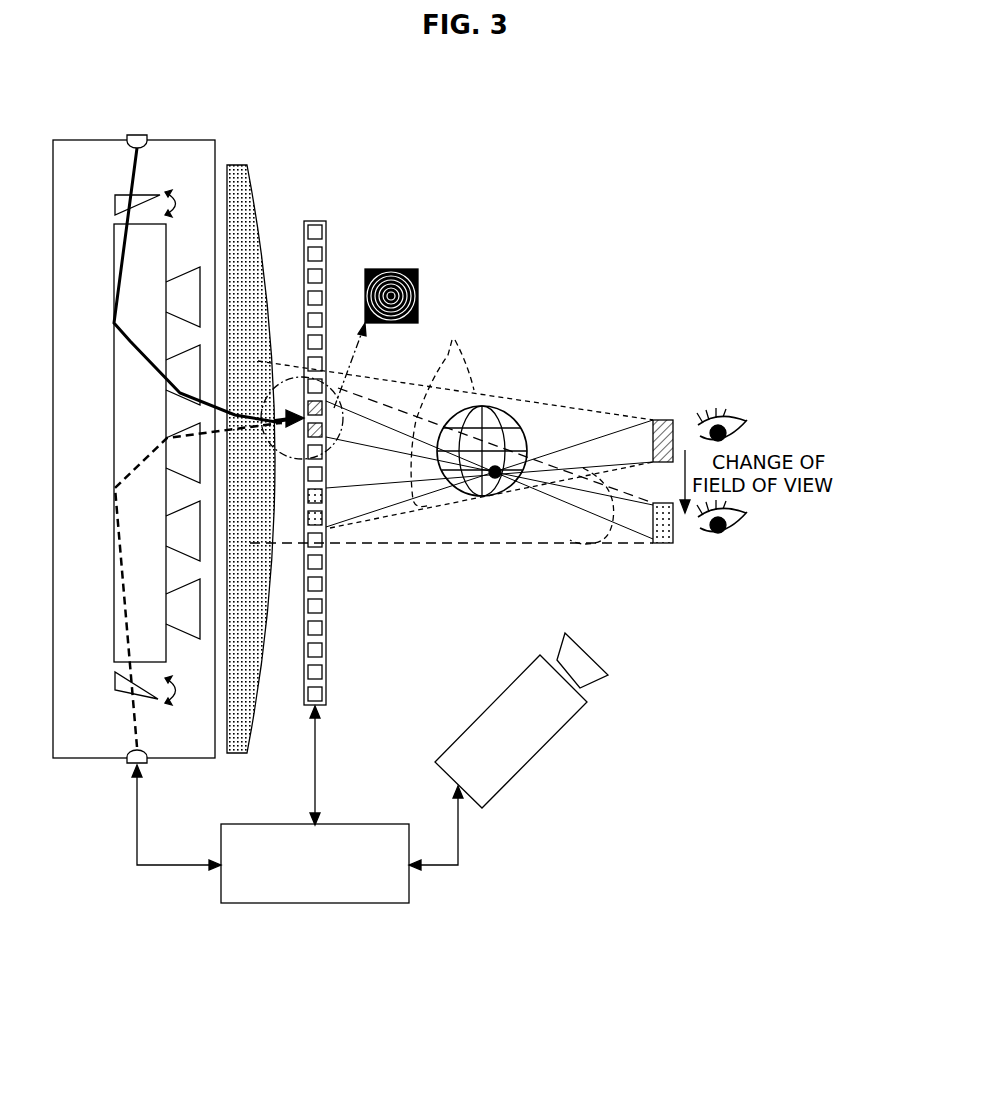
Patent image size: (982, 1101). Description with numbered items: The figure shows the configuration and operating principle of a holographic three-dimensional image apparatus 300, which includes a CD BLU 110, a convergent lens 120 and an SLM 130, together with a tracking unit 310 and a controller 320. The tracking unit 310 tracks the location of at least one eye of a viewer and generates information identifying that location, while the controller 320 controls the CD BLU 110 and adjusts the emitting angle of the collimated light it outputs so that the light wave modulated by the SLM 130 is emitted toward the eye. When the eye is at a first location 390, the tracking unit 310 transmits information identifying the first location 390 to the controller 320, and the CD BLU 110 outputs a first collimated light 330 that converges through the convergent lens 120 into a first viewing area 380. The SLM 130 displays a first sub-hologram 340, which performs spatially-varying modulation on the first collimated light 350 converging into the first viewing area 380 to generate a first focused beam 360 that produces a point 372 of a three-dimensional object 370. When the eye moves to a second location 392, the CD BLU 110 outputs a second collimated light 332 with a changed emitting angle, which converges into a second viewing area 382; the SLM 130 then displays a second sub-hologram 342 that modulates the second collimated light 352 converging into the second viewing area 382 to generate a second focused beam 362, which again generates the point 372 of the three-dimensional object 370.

The holographic 3D image apparatus 300 is at (484, 100).
The CD BLU 110 is at (178, 139).
The convergent lens 120 is at (237, 164).
The SLM 130 is at (315, 221).
The tracking unit 310 is at (540, 753).
The controller 320 is at (315, 905).
The first collimated light 330 is at (142, 456).
The second collimated light 332 is at (148, 366).
The first sub-hologram 340 is at (337, 413).
The second sub-hologram 342 is at (323, 520).
The first collimated light converging into the first viewing area 350 is at (442, 411).
The second collimated light converging into the second viewing area 352 is at (597, 543).
The first focused beam 360 is at (600, 466).
The second focused beam 362 is at (588, 493).
The 3D object 370 is at (506, 406).
The point of 3D object 372 is at (490, 480).
The first viewing area 380 is at (662, 419).
The second viewing area 382 is at (664, 545).
The first location 390 is at (748, 421).
The second location 392 is at (748, 513).